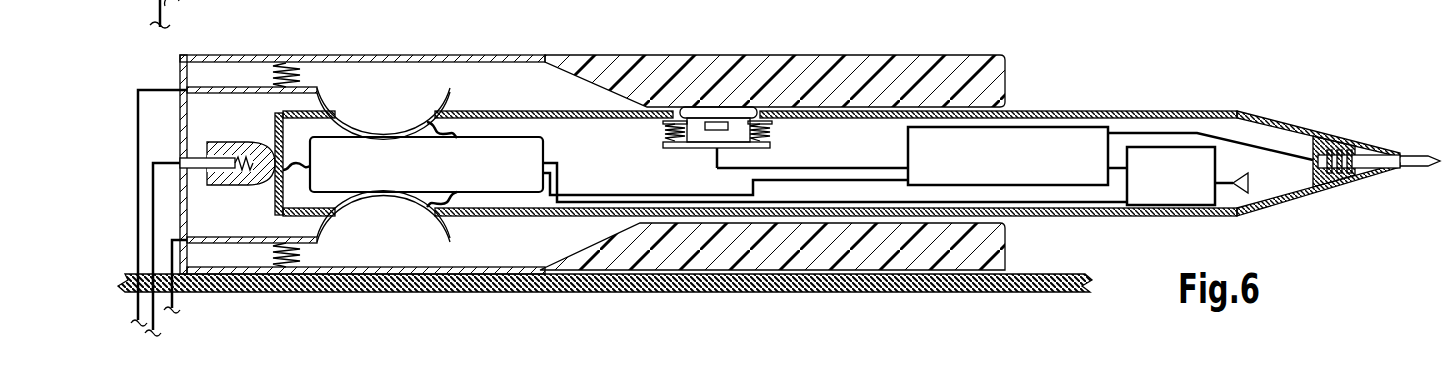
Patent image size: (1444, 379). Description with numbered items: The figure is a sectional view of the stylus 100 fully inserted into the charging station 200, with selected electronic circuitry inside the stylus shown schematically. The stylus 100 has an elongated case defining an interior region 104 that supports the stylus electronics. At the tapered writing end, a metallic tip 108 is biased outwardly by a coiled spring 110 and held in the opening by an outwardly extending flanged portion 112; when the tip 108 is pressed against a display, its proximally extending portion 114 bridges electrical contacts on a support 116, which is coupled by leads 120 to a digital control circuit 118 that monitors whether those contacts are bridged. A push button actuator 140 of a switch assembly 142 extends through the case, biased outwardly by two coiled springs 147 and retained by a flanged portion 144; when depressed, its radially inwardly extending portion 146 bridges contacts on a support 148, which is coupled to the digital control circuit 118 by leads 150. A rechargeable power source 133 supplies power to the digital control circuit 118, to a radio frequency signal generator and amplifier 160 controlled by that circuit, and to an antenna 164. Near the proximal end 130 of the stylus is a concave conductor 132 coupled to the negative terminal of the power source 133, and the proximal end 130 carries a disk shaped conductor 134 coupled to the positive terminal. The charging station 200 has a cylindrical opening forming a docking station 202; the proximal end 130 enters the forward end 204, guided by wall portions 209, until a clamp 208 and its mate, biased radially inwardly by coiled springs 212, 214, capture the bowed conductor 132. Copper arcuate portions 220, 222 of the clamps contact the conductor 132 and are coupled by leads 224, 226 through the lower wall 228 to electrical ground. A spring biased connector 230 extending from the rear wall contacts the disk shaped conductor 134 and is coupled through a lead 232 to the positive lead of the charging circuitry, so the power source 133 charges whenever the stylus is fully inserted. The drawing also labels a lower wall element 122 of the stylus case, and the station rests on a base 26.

The base plate 26 is at (1040, 272).
The stylus 100 is at (1110, 70).
The interior region 104 is at (553, 125).
The metallic tip 108 is at (1417, 163).
The coiled spring 110 is at (1342, 147).
The flanged portion 112 is at (1363, 147).
The proximally extending portion 114 is at (1343, 150).
The support 116 is at (1313, 172).
The digital control circuit 118 is at (1080, 127).
The leads 120 is at (1155, 133).
The lower housing block 122 is at (827, 202).
The proximal end 130 is at (277, 133).
The conductor 132 is at (373, 197).
The rechargeable power source 133 is at (507, 137).
The disk shaped conductor 134 is at (273, 190).
The push button actuator 140 is at (713, 108).
The switch assembly 142 is at (618, 169).
The flanged portion 144 is at (672, 121).
The radially inwardly extending portion 146 is at (717, 148).
The coiled springs 147 is at (660, 123).
The support 148 is at (747, 149).
The leads 150 is at (890, 167).
The radio frequency signal generator and amplifier 160 is at (1188, 207).
The antenna 164 is at (1237, 193).
The charging station 200 is at (817, 32).
The docking station 202 is at (413, 101).
The forward end 204 is at (1005, 107).
The clamp 208 is at (340, 75).
The wall portions 209 is at (878, 108).
The coiled spring 212 is at (288, 252).
The coiled spring 214 is at (283, 67).
The arcuate portion 220 is at (412, 212).
The arcuate portion 222 is at (434, 98).
The lead 224 is at (173, 308).
The lead 226 is at (137, 117).
The lower wall 228 is at (492, 268).
The spring biased connector 230 is at (243, 140).
The lead 232 is at (157, 323).